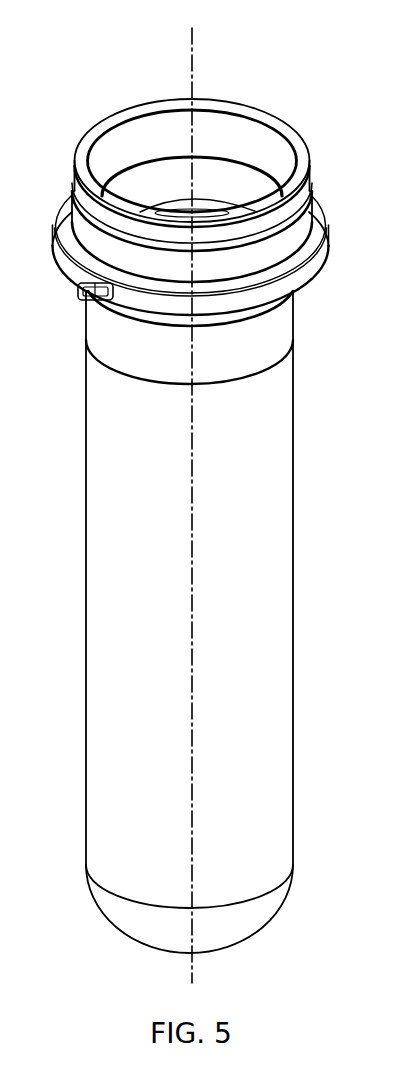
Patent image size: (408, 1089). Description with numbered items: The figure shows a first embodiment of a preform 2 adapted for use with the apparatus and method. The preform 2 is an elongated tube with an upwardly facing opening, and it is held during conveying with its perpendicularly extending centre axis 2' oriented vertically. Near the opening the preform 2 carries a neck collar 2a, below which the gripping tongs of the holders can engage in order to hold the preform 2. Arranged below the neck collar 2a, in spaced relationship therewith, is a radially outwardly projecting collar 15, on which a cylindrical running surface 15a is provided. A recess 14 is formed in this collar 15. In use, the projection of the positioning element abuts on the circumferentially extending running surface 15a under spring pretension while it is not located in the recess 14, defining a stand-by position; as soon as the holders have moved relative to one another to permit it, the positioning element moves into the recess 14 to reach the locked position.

The preform 2 is at (207, 526).
The centre axis 2' is at (221, 505).
The neck collar 2a is at (298, 227).
The recess 14 is at (80, 300).
The collar 15 is at (330, 267).
The running surface 15a is at (330, 248).